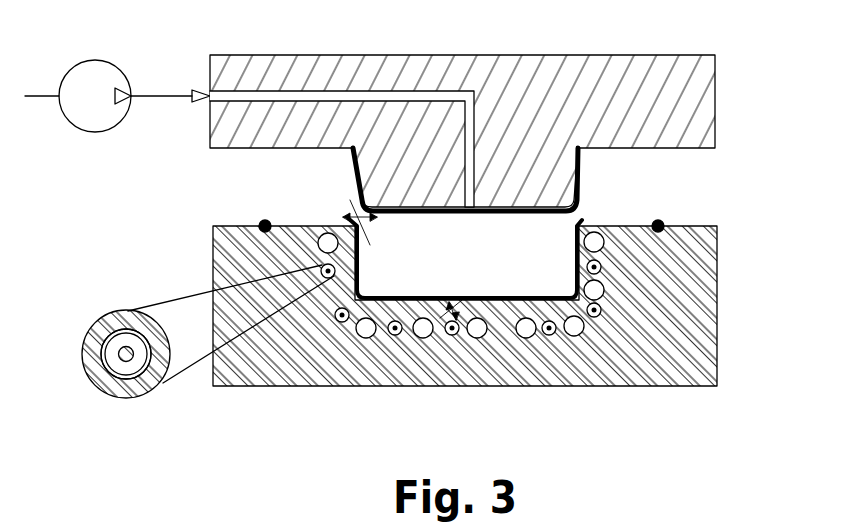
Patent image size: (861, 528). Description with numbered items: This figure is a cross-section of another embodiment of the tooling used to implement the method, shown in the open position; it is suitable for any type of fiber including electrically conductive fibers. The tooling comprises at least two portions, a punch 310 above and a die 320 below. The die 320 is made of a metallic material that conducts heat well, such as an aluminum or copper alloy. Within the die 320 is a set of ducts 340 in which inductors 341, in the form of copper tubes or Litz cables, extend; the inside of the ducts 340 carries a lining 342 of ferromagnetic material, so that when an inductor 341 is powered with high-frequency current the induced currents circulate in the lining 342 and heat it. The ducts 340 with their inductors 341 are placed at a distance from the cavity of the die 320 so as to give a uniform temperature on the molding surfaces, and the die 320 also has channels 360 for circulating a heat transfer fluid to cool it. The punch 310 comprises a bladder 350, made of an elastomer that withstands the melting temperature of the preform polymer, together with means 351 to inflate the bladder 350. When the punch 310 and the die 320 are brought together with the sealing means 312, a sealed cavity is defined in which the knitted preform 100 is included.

The knitted preform 100 is at (380, 286).
The punch 310 is at (715, 108).
The sealing means 312 is at (658, 224).
The die 320 is at (717, 305).
The ducts 340 is at (313, 256).
The inductors 341 is at (133, 357).
The lining 342 is at (117, 363).
The bladder 350 is at (578, 190).
The means to inflate said bladder 351 is at (103, 60).
The channels 360 is at (527, 338).